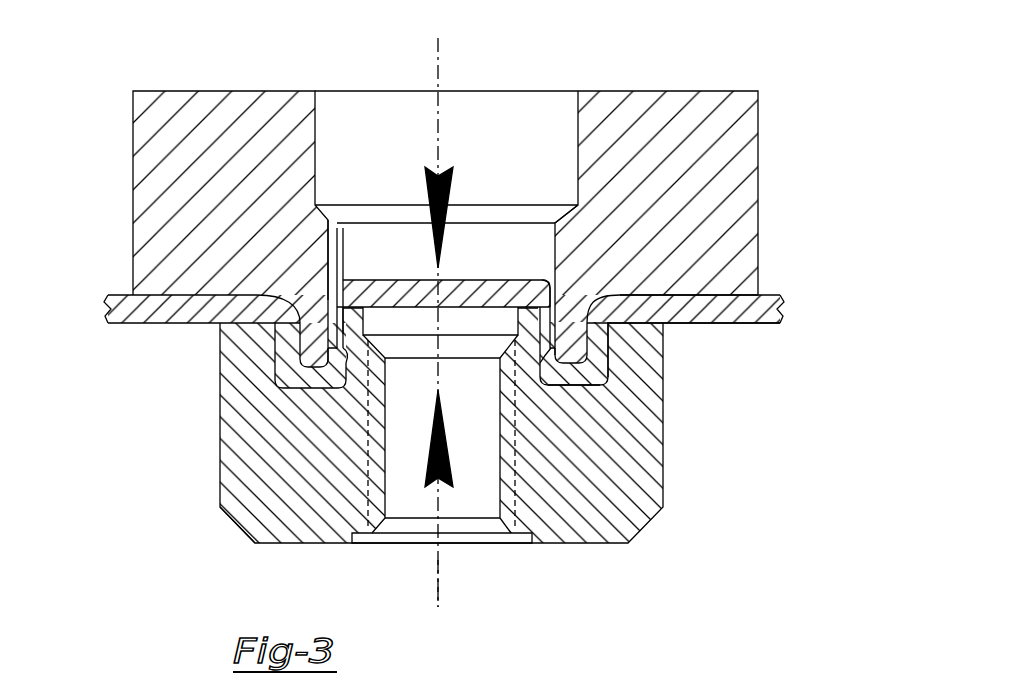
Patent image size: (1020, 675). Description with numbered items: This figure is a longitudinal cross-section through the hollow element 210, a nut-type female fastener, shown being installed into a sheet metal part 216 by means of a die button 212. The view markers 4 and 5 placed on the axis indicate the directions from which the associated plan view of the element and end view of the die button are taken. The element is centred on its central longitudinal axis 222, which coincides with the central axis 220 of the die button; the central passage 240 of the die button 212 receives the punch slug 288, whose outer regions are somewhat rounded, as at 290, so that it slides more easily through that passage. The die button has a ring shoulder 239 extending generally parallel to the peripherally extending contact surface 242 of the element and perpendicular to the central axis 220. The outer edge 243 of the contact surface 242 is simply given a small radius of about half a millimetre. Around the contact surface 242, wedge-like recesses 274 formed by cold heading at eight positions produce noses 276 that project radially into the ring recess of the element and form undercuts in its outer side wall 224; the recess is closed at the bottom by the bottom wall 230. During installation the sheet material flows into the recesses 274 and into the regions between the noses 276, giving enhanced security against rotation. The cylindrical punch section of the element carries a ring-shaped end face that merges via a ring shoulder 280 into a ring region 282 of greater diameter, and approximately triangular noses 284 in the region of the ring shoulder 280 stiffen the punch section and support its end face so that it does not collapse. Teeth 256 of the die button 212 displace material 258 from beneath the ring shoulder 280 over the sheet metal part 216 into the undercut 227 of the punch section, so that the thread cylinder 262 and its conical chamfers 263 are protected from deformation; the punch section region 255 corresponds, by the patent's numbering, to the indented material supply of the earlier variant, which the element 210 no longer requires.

The section line 4 is at (438, 303).
The section line 5 is at (438, 611).
The hollow element 210 is at (222, 525).
The die button 212 is at (758, 172).
The sheet metal part 216 is at (787, 293).
The central axis 220 is at (441, 151).
The central longitudinal axis 222 is at (442, 570).
The outer side wall 224 is at (227, 393).
The undercut 227 is at (591, 386).
The bottom wall 230 is at (578, 390).
The ring shoulder 239 is at (690, 292).
The central passage 240 is at (393, 134).
The contact surface 242 is at (279, 330).
The outer edge 243 is at (660, 327).
The indented position 255 is at (328, 296).
The teeth 256 is at (343, 255).
The displaced material 258 is at (346, 378).
The thread cylinder 262 is at (380, 424).
The conical chamfers 263 is at (394, 348).
The wedge-like recesses 274 is at (278, 372).
The noses 276 is at (610, 361).
The ring shoulder 280 is at (540, 366).
The ring region 282 is at (573, 312).
The noses 284 is at (547, 331).
The punch slug 288 is at (386, 290).
The rounded outer region 290 is at (549, 280).